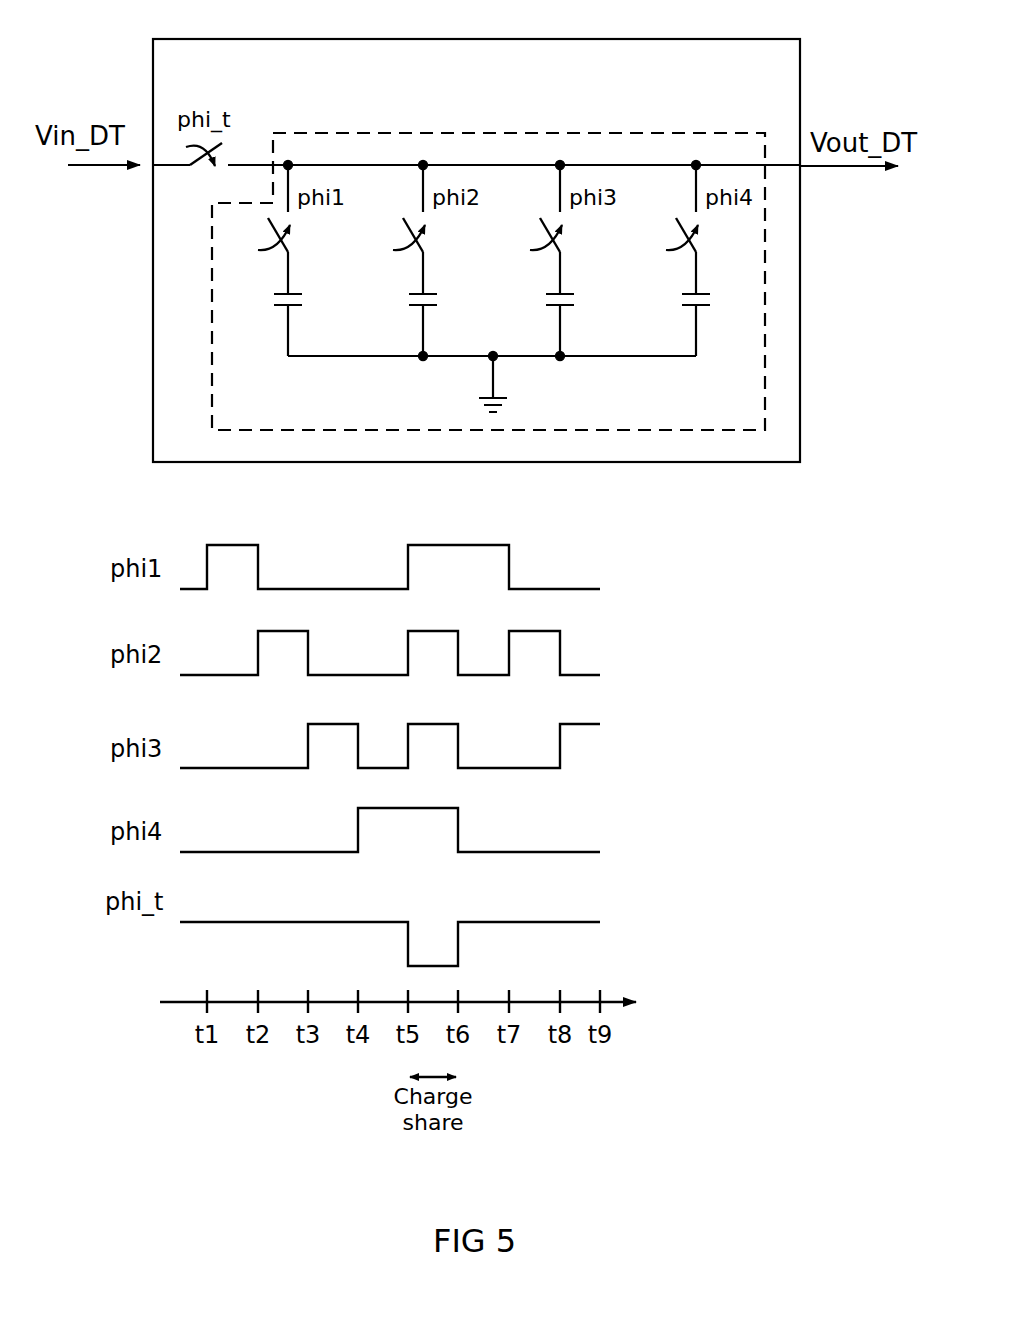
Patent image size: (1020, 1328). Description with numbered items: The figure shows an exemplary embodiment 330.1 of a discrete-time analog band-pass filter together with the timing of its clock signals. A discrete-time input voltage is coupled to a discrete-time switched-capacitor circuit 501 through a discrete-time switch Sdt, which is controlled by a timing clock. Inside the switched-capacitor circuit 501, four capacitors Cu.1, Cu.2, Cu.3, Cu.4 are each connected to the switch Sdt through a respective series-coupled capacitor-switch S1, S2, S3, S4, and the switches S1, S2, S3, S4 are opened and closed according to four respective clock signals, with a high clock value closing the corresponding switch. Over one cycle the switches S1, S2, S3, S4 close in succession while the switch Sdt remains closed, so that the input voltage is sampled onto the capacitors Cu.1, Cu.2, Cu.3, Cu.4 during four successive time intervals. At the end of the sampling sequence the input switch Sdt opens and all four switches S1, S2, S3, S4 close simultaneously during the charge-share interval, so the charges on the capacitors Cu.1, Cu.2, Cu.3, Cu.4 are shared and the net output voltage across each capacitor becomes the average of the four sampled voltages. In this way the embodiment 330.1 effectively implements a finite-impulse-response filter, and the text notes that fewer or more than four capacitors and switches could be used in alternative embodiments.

The exemplary embodiment of DT analog BPF 330.1 is at (452, 39).
The discrete-time switched-capacitor circuit 501 is at (566, 133).
The discrete-time switch Sdt is at (214, 175).
The capacitor-switch S1 is at (265, 229).
The capacitor-switch S2 is at (400, 229).
The capacitor-switch S3 is at (537, 229).
The capacitor-switch S4 is at (673, 229).
The capacitor Cu.1 is at (261, 304).
The capacitor Cu.2 is at (396, 304).
The capacitor Cu.3 is at (532, 304).
The capacitor Cu.4 is at (668, 304).